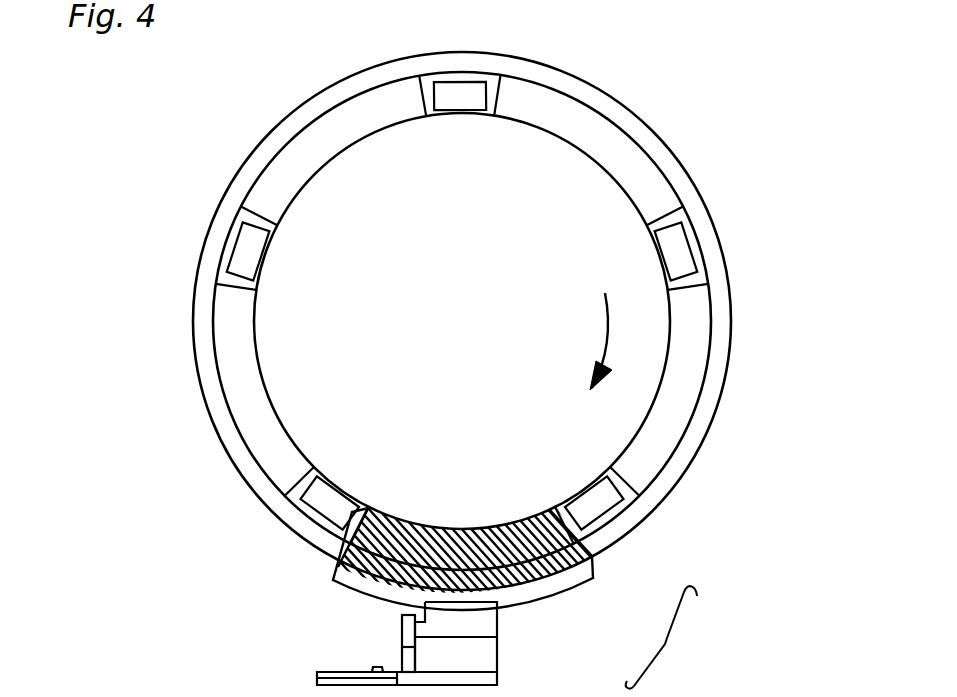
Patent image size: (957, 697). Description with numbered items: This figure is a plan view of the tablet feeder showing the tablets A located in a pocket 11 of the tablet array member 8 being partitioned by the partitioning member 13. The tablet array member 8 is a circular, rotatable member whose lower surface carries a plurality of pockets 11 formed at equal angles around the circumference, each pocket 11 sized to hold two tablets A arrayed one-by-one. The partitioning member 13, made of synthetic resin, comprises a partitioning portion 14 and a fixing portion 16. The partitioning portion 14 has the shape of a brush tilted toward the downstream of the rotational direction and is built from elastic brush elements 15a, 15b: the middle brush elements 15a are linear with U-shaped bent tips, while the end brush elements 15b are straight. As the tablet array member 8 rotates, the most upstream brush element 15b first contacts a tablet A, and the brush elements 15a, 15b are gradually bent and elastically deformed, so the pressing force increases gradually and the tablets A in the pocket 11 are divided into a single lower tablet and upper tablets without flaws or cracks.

The tablet array member 8 is at (577, 187).
The tablets A is at (677, 242).
The pocket 11 is at (688, 280).
The partitioning member 13 is at (516, 596).
The partitioning portion 14 is at (586, 578).
The brush elements 15a is at (472, 527).
The brush elements 15b is at (545, 510).
The fixing portion 16 is at (478, 650).